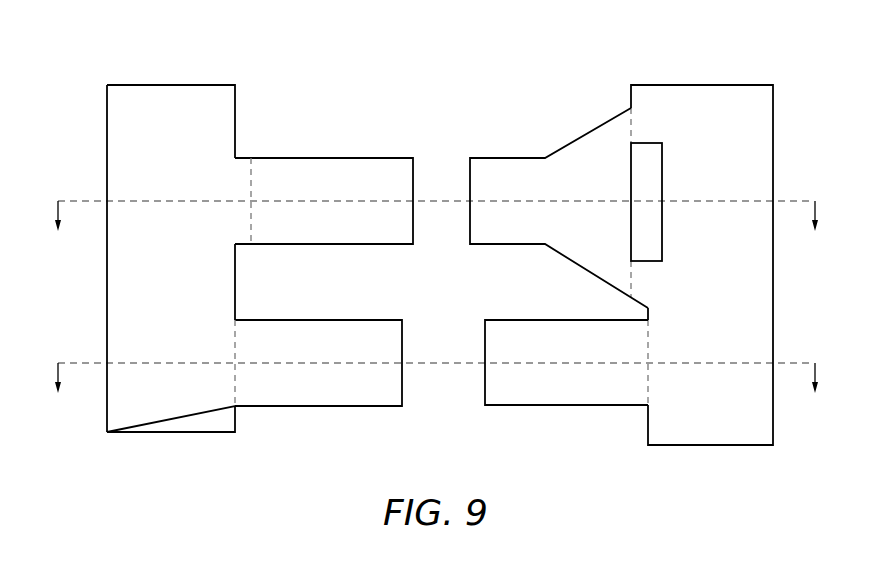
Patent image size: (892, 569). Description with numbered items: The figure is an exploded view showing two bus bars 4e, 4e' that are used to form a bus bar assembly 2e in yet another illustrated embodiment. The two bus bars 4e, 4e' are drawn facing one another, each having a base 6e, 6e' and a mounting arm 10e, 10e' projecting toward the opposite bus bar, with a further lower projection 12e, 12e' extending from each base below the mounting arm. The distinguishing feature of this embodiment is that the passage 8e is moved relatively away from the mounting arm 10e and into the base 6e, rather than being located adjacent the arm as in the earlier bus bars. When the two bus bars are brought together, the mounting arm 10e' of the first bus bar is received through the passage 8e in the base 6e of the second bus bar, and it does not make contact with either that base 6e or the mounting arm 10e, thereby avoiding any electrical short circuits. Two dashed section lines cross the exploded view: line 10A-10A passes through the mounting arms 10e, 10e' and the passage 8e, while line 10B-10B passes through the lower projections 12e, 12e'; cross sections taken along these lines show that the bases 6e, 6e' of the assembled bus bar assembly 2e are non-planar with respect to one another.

The bus bar assembly 2e is at (454, 79).
The bus bar 4e' is at (230, 227).
The bus bar 4e is at (644, 223).
The base 6e' is at (141, 258).
The base 6e is at (724, 265).
The passage 8e is at (648, 175).
The mounting arm 10e' is at (240, 206).
The mounting arm 10e is at (642, 208).
The first lower projection 12e' is at (233, 369).
The second lower projection 12e is at (647, 373).
The section line 10A- 10A is at (436, 211).
The section line 10B- 10B is at (436, 373).